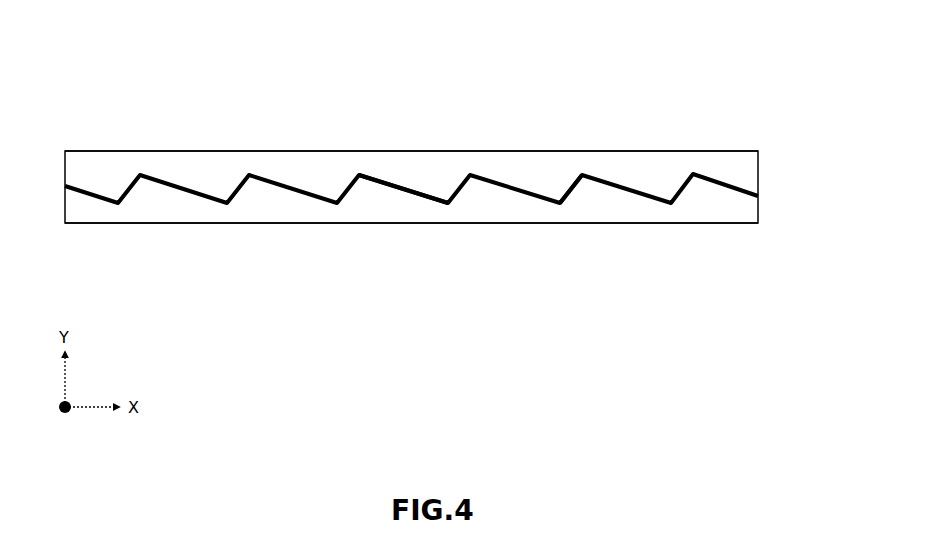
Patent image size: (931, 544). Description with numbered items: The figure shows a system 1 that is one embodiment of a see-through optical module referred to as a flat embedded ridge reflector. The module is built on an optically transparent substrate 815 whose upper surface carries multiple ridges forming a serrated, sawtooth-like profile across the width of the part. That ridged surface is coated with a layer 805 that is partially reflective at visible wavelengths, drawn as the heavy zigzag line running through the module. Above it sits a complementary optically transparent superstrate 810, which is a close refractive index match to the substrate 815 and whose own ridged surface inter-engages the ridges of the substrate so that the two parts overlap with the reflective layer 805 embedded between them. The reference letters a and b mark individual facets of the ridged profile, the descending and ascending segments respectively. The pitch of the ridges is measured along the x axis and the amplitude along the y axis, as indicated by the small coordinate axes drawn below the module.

The system 1 is at (105, 149).
The partially reflective layer 805 is at (91, 198).
The optically transparent superstrate 810 is at (749, 158).
The optically transparent substrate 815 is at (749, 216).
The descending segment a is at (402, 197).
The ascending segment b is at (578, 197).